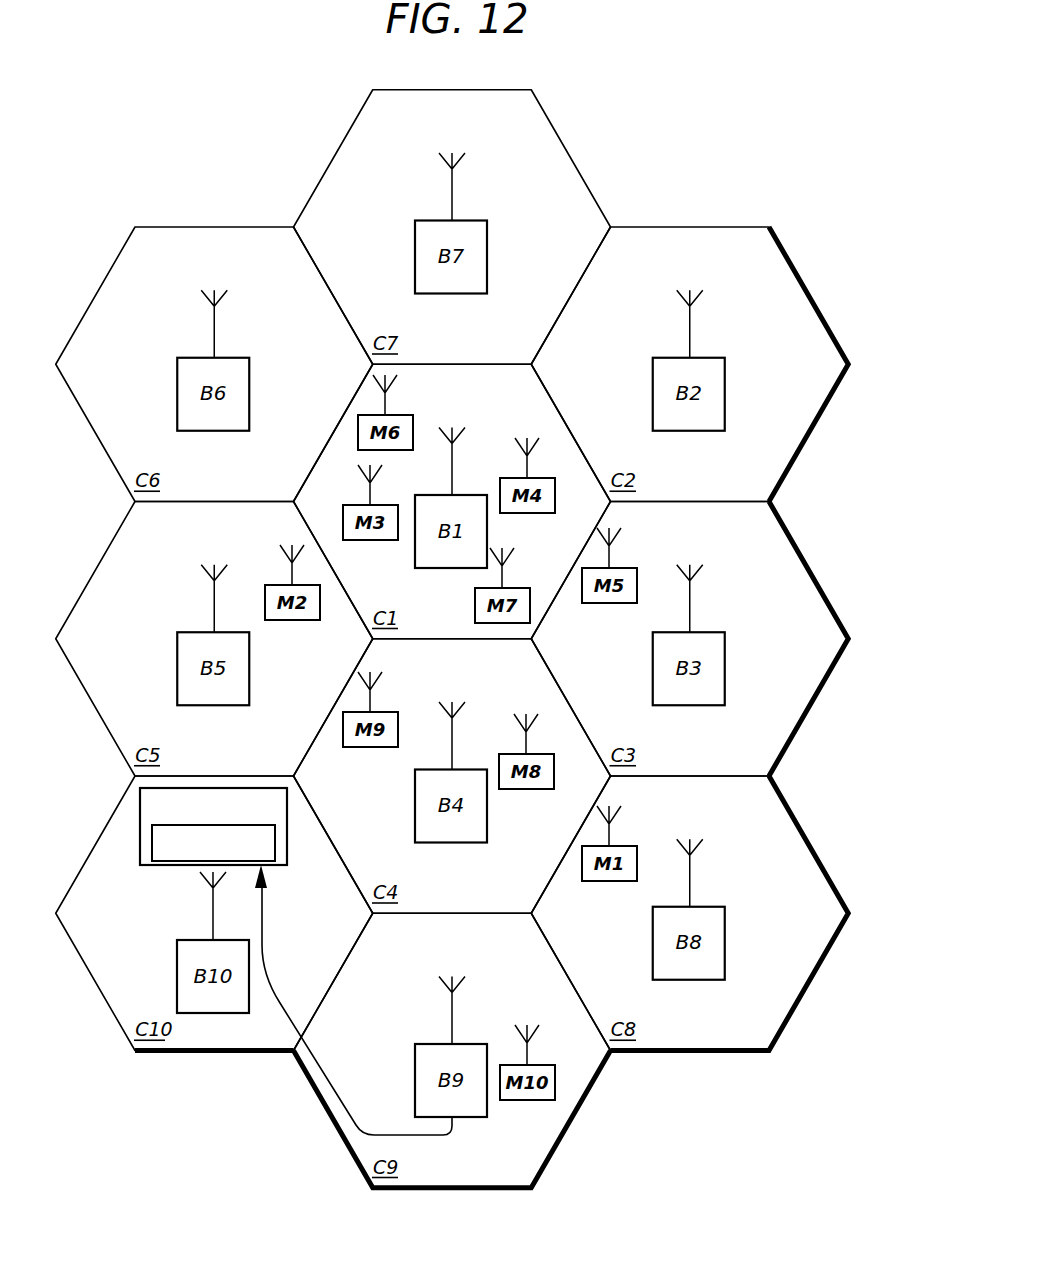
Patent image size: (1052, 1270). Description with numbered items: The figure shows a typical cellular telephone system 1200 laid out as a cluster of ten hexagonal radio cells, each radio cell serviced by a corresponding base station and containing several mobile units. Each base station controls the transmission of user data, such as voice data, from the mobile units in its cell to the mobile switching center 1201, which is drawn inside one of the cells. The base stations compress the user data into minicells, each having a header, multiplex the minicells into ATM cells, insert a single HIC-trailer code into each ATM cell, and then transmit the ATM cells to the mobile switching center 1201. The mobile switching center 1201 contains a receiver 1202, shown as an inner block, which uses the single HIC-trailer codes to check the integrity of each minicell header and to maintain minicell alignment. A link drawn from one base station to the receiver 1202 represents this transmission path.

The cellular telephone system 1200 is at (650, 139).
The mobile switching center (MSC) 1201 is at (140, 801).
The receiver 1202 is at (152, 842).